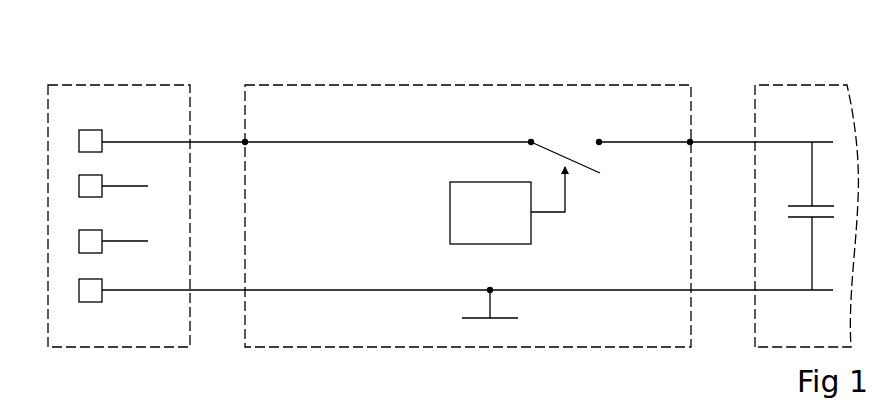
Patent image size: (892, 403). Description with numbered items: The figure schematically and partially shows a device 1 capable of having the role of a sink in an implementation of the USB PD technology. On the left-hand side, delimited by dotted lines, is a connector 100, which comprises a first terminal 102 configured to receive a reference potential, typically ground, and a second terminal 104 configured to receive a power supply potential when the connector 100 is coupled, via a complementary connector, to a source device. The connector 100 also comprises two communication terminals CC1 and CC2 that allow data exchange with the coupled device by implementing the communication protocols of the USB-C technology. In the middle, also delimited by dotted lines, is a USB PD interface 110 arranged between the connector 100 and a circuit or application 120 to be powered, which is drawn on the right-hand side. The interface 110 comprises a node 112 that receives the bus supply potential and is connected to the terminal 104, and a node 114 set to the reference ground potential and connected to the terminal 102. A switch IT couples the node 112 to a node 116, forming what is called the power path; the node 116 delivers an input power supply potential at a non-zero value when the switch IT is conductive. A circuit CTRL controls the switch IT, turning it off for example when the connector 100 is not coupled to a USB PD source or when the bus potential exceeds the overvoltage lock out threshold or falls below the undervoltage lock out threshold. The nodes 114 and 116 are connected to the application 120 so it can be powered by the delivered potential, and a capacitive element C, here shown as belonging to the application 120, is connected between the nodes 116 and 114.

The device 1 is at (61, 67).
The connector 100 is at (105, 85).
The first terminal 102 is at (92, 279).
The second terminal 104 is at (92, 130).
The communication terminal CC1 is at (92, 176).
The communication terminal CC2 is at (92, 231).
The USB PD interface 110 is at (341, 85).
The node 112 is at (246, 141).
The node 114 is at (491, 289).
The node 116 is at (690, 141).
The switch IT is at (570, 149).
The control circuit CTRL is at (507, 205).
The application 120 is at (777, 85).
The capacitive element C is at (811, 216).